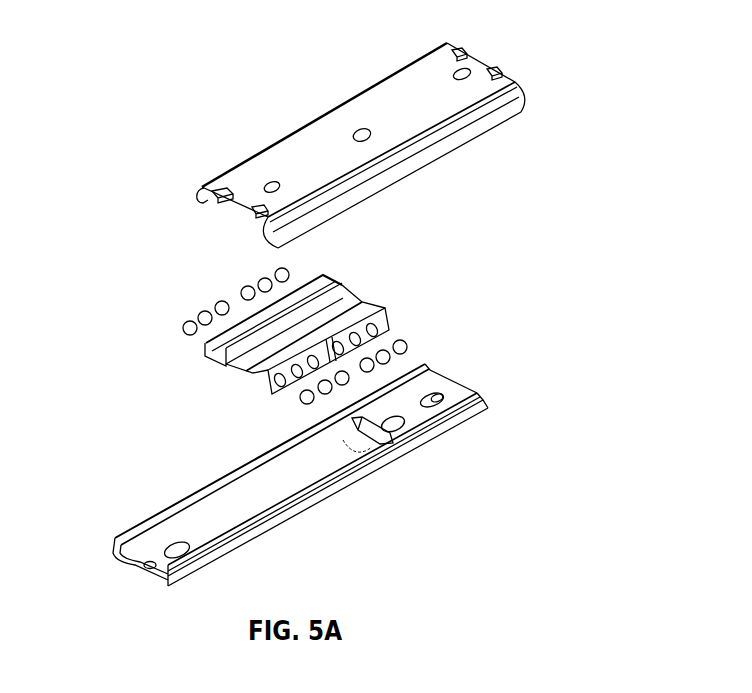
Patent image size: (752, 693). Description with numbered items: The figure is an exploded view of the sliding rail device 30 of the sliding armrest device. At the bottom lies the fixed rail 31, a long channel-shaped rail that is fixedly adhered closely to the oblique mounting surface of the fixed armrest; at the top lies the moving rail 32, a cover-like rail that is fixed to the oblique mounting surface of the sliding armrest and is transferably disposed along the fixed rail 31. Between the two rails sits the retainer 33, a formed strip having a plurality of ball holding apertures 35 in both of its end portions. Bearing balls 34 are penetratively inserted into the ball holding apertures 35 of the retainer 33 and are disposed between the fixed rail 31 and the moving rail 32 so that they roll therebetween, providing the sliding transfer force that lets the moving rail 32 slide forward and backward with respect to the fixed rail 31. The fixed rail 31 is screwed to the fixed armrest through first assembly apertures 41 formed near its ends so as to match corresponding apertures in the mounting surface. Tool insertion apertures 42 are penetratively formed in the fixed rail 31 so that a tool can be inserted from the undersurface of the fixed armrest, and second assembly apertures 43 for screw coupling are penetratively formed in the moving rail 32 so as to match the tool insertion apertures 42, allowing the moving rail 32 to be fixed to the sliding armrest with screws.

The sliding rail device 30 is at (169, 85).
The fixed rail 31 is at (272, 467).
The moving rail 32 is at (355, 137).
The retainer 33 is at (325, 326).
The bearing ball 34 is at (407, 344).
The ball holding aperture 35 is at (385, 326).
The first assembly aperture 41 is at (441, 397).
The tool insertion aperture 42 is at (170, 545).
The second assembly aperture 43 is at (456, 73).